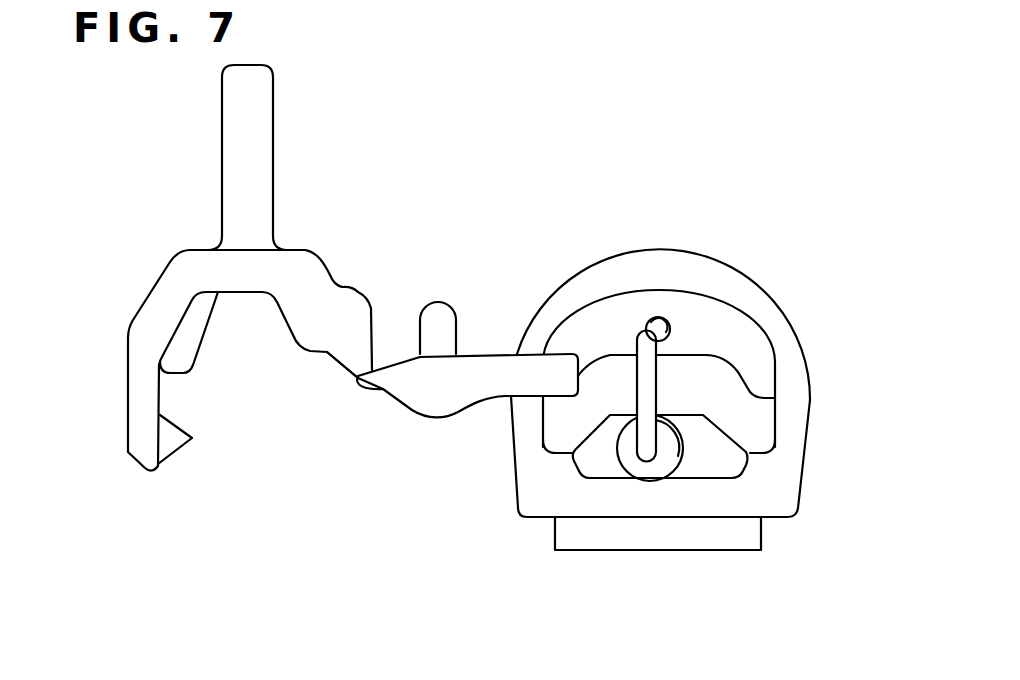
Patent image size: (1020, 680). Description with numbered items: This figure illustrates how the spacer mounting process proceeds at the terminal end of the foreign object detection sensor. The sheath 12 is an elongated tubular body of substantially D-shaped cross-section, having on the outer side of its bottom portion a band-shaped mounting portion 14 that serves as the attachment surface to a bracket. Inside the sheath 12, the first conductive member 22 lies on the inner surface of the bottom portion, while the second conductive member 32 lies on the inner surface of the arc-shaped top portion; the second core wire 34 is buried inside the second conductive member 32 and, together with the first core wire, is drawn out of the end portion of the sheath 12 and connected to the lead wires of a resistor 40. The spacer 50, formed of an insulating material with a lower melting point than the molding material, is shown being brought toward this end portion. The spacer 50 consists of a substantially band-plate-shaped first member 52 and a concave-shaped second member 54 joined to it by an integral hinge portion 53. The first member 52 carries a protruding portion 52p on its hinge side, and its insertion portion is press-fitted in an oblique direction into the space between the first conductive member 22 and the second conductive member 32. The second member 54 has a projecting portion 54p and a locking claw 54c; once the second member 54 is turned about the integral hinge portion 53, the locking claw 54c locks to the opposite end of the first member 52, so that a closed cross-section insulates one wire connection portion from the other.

The sheath 12 is at (689, 404).
The mounting portion 14 is at (653, 538).
The first conductive member 22 is at (600, 464).
The second conductive member 32 is at (628, 313).
The second core wire 34 is at (660, 318).
The resistor 40 is at (672, 458).
The spacer 50 is at (461, 344).
The first member 52 is at (402, 355).
The protruding portion 52p is at (417, 310).
The integral hinge portion 53 is at (358, 378).
The second member 54 is at (197, 312).
The projecting portion 54p is at (240, 147).
The locking claw 54c is at (177, 447).